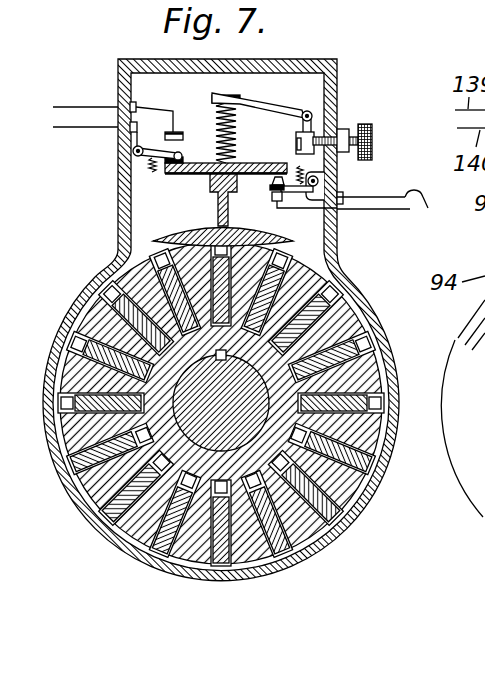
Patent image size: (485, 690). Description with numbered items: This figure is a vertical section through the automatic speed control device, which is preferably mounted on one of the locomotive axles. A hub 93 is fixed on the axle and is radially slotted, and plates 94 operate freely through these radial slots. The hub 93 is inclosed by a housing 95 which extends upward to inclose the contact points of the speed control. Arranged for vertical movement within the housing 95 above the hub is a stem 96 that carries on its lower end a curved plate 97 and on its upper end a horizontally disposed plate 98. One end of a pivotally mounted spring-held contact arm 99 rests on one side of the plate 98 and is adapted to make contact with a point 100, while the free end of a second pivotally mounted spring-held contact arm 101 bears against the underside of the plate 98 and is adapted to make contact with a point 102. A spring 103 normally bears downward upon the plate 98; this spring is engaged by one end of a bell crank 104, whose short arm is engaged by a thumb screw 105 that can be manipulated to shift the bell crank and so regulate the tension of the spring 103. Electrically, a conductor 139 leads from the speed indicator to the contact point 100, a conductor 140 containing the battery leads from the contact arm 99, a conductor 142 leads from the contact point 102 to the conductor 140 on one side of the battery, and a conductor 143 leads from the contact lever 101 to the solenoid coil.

The hub 93 is at (83, 507).
The plates 94 is at (195, 567).
The housing 95 is at (347, 527).
The stem 96 is at (218, 208).
The curved plate 97 is at (280, 234).
The plate 98 is at (258, 166).
The contact arm 99 is at (142, 157).
The contact point 100 is at (180, 131).
The contact arm 101 is at (302, 172).
The contact point 102 is at (276, 196).
The spring 103 is at (218, 130).
The bell crank 104 is at (282, 108).
The thumb screw 105 is at (349, 133).
The conductor 139 is at (73, 106).
The conductor 140 is at (87, 129).
The conductor 142 is at (389, 212).
The conductor 143 is at (437, 208).